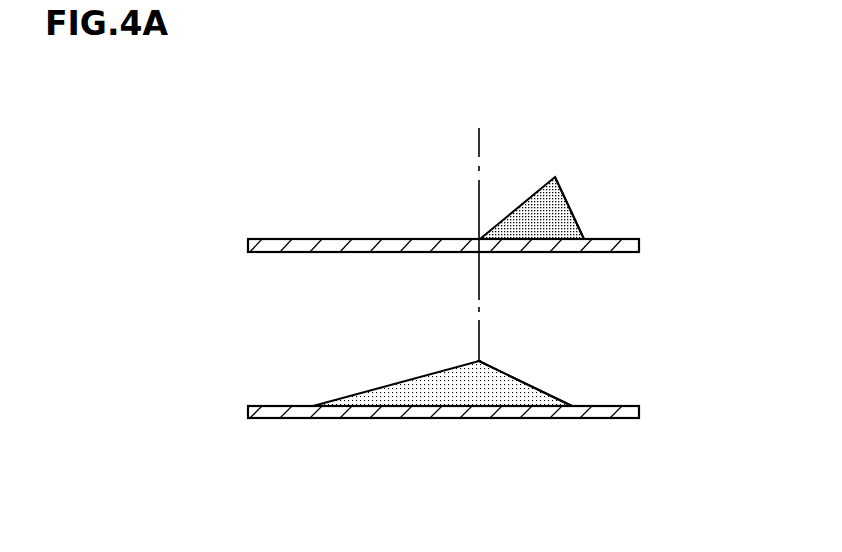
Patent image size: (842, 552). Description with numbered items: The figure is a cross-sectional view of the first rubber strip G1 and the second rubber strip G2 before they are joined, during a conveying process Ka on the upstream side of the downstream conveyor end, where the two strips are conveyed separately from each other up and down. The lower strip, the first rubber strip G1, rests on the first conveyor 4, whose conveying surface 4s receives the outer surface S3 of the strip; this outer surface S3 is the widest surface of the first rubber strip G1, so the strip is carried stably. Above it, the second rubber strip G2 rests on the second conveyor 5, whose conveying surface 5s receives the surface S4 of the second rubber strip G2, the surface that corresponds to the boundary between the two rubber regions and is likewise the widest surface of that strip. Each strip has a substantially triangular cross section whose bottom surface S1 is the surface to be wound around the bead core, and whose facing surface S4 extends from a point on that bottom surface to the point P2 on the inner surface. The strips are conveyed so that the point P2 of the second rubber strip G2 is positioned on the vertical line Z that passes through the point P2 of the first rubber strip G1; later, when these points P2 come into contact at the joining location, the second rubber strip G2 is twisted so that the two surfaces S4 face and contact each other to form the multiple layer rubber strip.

The vertical line Z is at (477, 229).
The conveying surface of the second conveyor 5s is at (443, 199).
The second conveyor 5 is at (306, 239).
The conveying surface of the first conveyor 4s is at (435, 365).
The first conveyor 4 is at (273, 406).
The second rubber strip G2 is at (565, 200).
The first rubber strip G1 is at (437, 393).
The bottom surface S1 is at (575, 213).
The outer surface S3 is at (447, 407).
The facing surface S4 is at (543, 245).
The point P2 is at (473, 235).
The conveying process Ka is at (673, 133).